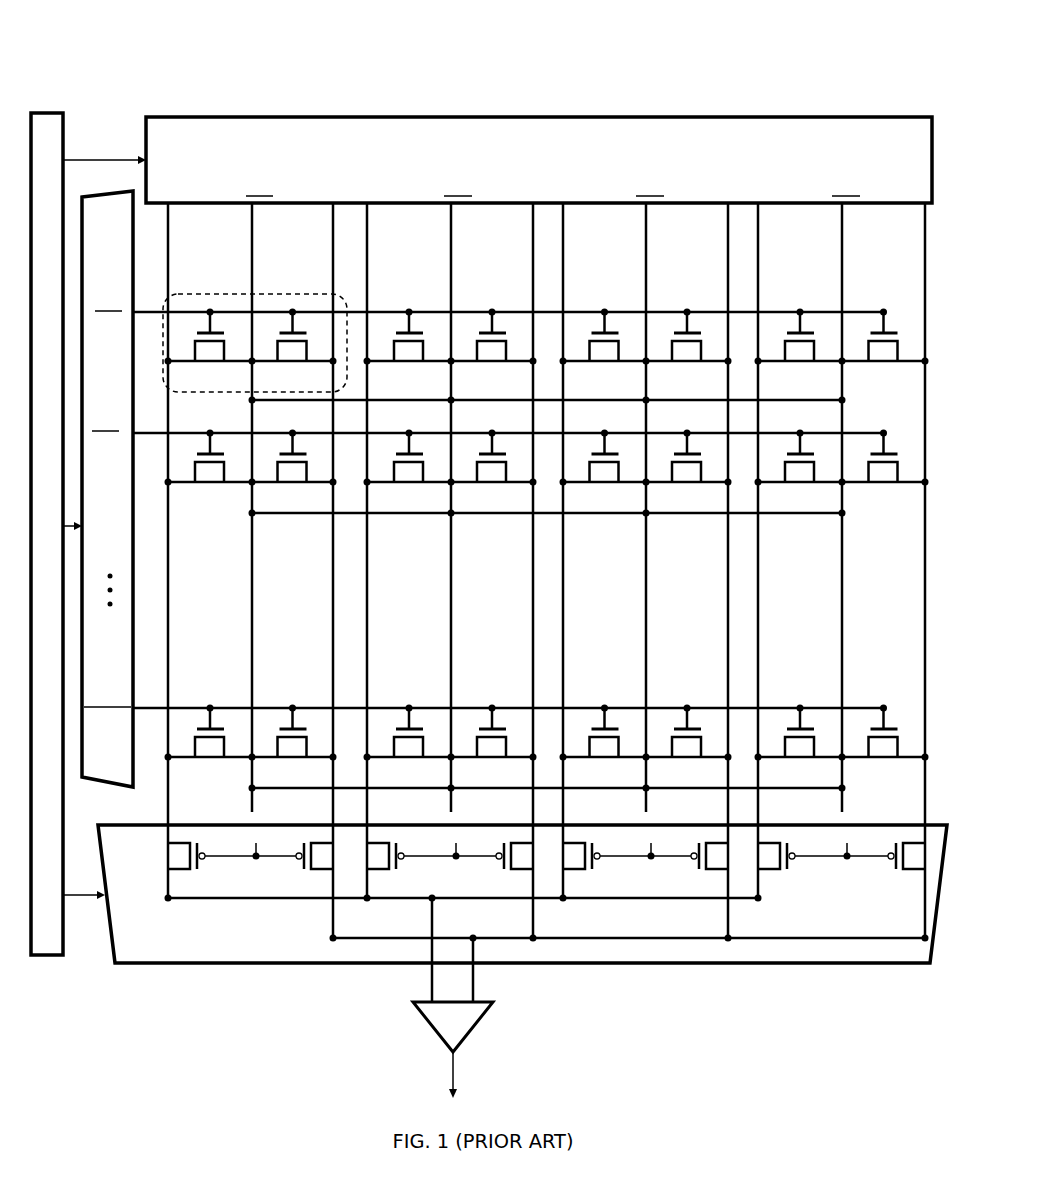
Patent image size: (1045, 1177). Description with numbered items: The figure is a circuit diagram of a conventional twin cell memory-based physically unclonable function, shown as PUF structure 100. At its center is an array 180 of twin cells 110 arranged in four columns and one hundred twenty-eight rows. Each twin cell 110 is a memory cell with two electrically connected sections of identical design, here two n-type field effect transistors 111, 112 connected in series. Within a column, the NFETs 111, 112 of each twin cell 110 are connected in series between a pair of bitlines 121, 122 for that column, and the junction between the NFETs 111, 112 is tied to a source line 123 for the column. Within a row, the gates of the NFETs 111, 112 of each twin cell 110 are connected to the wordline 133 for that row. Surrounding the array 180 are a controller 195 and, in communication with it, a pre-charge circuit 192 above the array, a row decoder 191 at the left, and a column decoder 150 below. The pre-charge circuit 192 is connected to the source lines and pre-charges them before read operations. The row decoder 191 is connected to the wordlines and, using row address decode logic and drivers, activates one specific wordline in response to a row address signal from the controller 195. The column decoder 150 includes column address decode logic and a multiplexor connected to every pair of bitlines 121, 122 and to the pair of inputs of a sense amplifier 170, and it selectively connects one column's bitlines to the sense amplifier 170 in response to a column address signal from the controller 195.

The PUF structure 100 is at (789, 56).
The twin cell 110 is at (255, 320).
The n-type field effect transistor 111 is at (209, 363).
The n-type field effect transistor 112 is at (291, 363).
The bitline 121 is at (168, 250).
The bitline 122 is at (333, 243).
The source line 123 is at (252, 283).
The wordline 133 is at (143, 308).
The column decoder 150 is at (813, 965).
The sense amplifier 170 is at (440, 1029).
The array 180 is at (870, 278).
The row decoder 191 is at (89, 278).
The pre-charge circuit 192 is at (702, 161).
The controller 195 is at (46, 113).